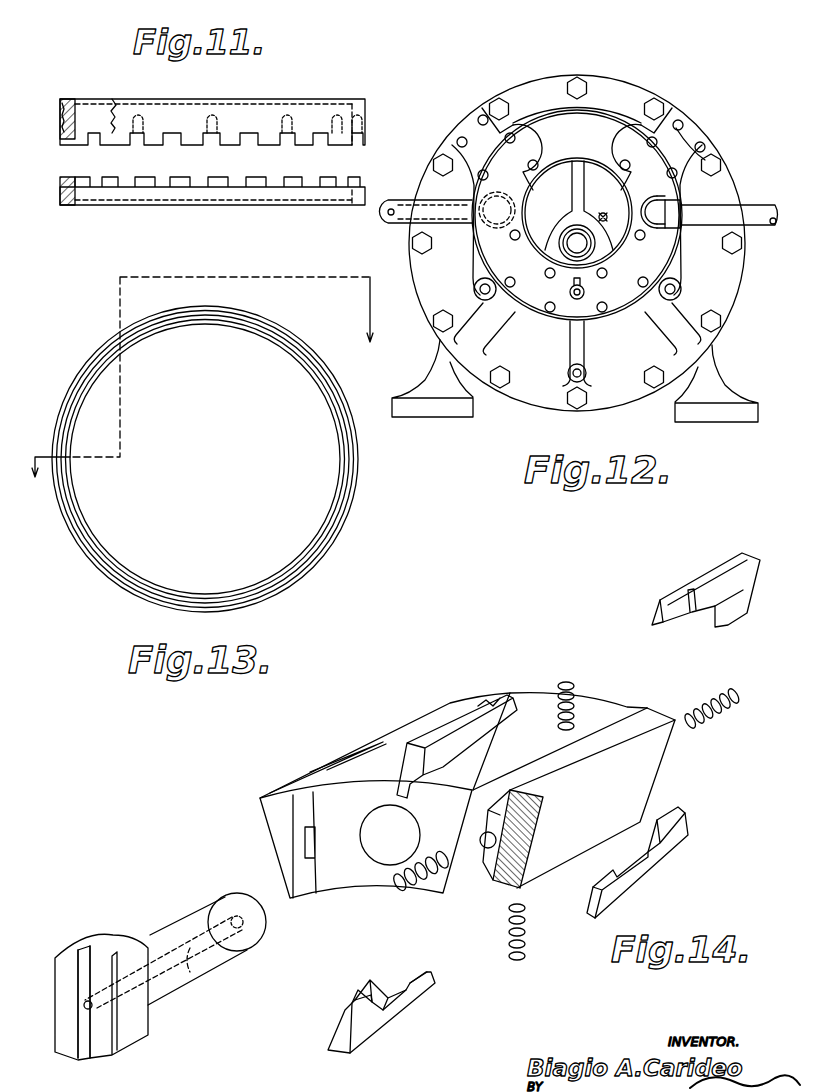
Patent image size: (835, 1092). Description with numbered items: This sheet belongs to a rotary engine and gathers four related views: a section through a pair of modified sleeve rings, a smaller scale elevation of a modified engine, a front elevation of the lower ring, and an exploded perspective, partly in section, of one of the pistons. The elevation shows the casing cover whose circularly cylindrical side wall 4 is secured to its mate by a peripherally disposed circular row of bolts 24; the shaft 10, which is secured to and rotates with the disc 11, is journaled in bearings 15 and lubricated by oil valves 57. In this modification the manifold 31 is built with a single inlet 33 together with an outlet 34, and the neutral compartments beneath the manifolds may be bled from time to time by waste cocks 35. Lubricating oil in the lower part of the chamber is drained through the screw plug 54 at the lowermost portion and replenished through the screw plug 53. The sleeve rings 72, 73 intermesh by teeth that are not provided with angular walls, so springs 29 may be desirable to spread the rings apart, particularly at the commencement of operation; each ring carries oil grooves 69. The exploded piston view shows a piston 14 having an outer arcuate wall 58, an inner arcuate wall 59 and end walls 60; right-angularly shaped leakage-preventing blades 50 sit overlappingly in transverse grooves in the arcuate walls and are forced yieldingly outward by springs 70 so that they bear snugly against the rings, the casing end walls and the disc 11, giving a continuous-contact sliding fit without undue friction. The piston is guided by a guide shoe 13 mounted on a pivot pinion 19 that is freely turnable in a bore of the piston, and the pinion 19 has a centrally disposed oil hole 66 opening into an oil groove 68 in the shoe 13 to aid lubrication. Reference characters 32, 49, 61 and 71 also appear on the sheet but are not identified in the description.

In FIG. 12, the cylindrical side wall 4 is at (640, 78).
In FIG. 12, the shaft 10 is at (572, 245).
In FIG. 13, the disc 11 is at (204, 389).
In FIG. 14, the guide shoe 13 is at (130, 1035).
In FIG. 14, the piston 14 is at (330, 745).
In FIG. 12, the bearings 15 is at (560, 235).
In FIG. 14, the pivot pinion 19 is at (215, 900).
In FIG. 12, the bolts 24 is at (503, 100).
In FIG. 11, the springs 29 is at (70, 140).
In FIG. 12, the manifold 31 is at (677, 142).
In FIG. 12, the bolt hole 32 is at (705, 147).
In FIG. 12, the inlet 33 is at (768, 228).
In FIG. 12, the outlet 34 is at (395, 223).
In FIG. 12, the waste cocks 35 is at (585, 292).
In FIG. 11, the slots 49 is at (287, 117).
In FIG. 13, the slots 49 is at (104, 605).
In FIG. 14, the leakage-preventing blades 50 is at (470, 707).
In FIG. 12, the screw plug 53 is at (681, 289).
In FIG. 12, the screw plug 54 is at (585, 373).
In FIG. 12, the oil valves 57 is at (604, 213).
In FIG. 14, the outer arcuate wall 58 is at (528, 713).
In FIG. 14, the inner arcuate wall 59 is at (428, 885).
In FIG. 14, the end walls 60 is at (640, 780).
In FIG. 12, the rib 61 is at (495, 325).
In FIG. 14, the oil hole 66 is at (190, 965).
In FIG. 14, the oil groove 68 is at (84, 958).
In FIG. 11, the oil grooves 69 is at (66, 99).
In FIG. 13, the oil grooves 69 is at (330, 563).
In FIG. 14, the springs 70 is at (575, 685).
In FIG. 14, the wedge block 71 is at (488, 848).
In FIG. 11, the ring 72 is at (365, 115).
In FIG. 11, the ring 73 is at (57, 188).
In FIG. 13, the ring 73 is at (354, 500).